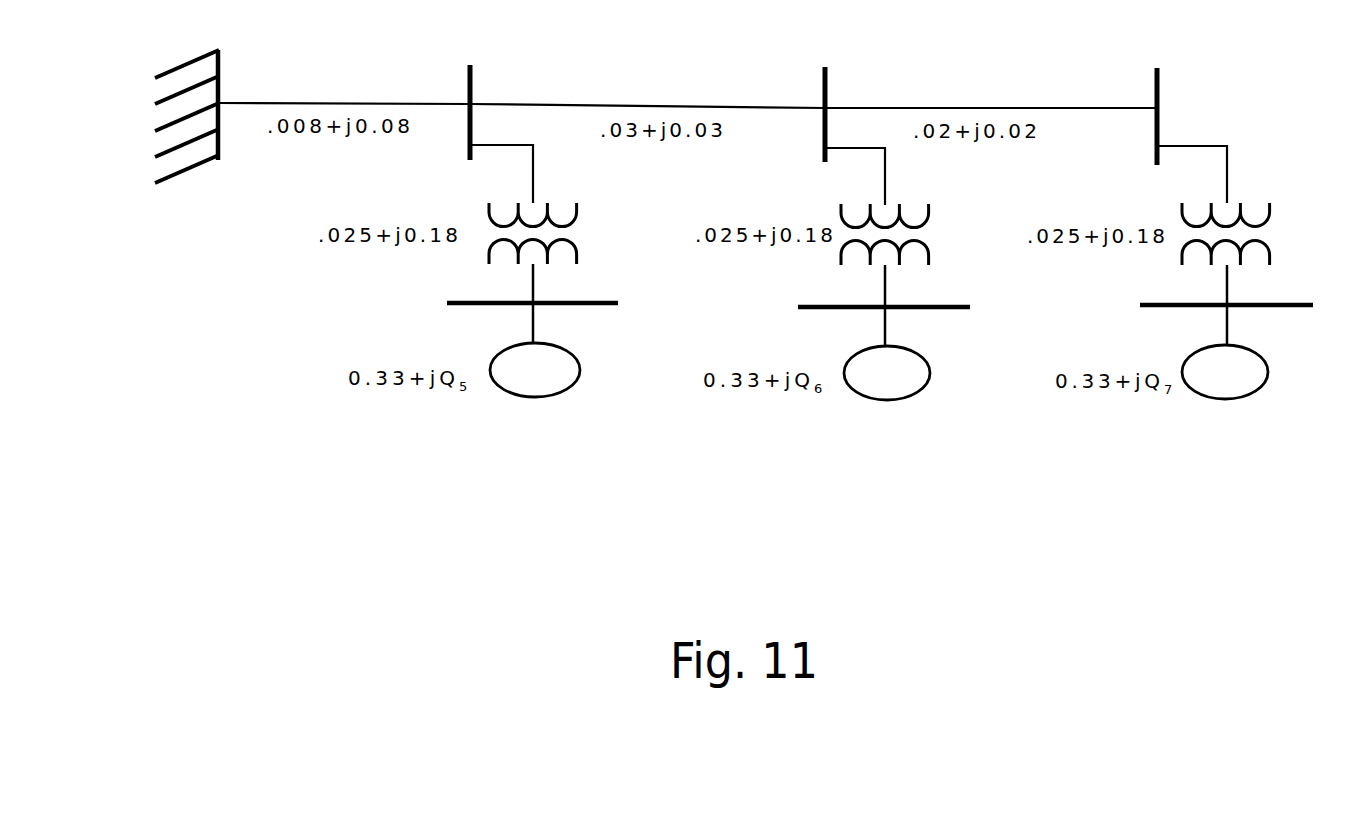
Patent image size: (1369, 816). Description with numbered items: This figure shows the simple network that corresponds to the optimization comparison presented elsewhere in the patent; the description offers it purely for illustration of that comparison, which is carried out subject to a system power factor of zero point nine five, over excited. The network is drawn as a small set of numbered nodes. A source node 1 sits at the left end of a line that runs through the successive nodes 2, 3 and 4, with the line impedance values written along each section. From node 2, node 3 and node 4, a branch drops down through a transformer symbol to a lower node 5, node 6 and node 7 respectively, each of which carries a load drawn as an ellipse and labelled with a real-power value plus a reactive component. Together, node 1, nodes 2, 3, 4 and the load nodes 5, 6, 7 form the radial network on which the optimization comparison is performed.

The infinite source bus 1 is at (201, 96).
The bus 2 is at (501, 106).
The bus 3 is at (855, 109).
The bus 4 is at (1162, 108).
The load bus 5 with transformer and load 5 is at (544, 300).
The load bus 6 with transformer and load 6 is at (895, 302).
The load bus 7 with transformer and load 7 is at (1232, 301).